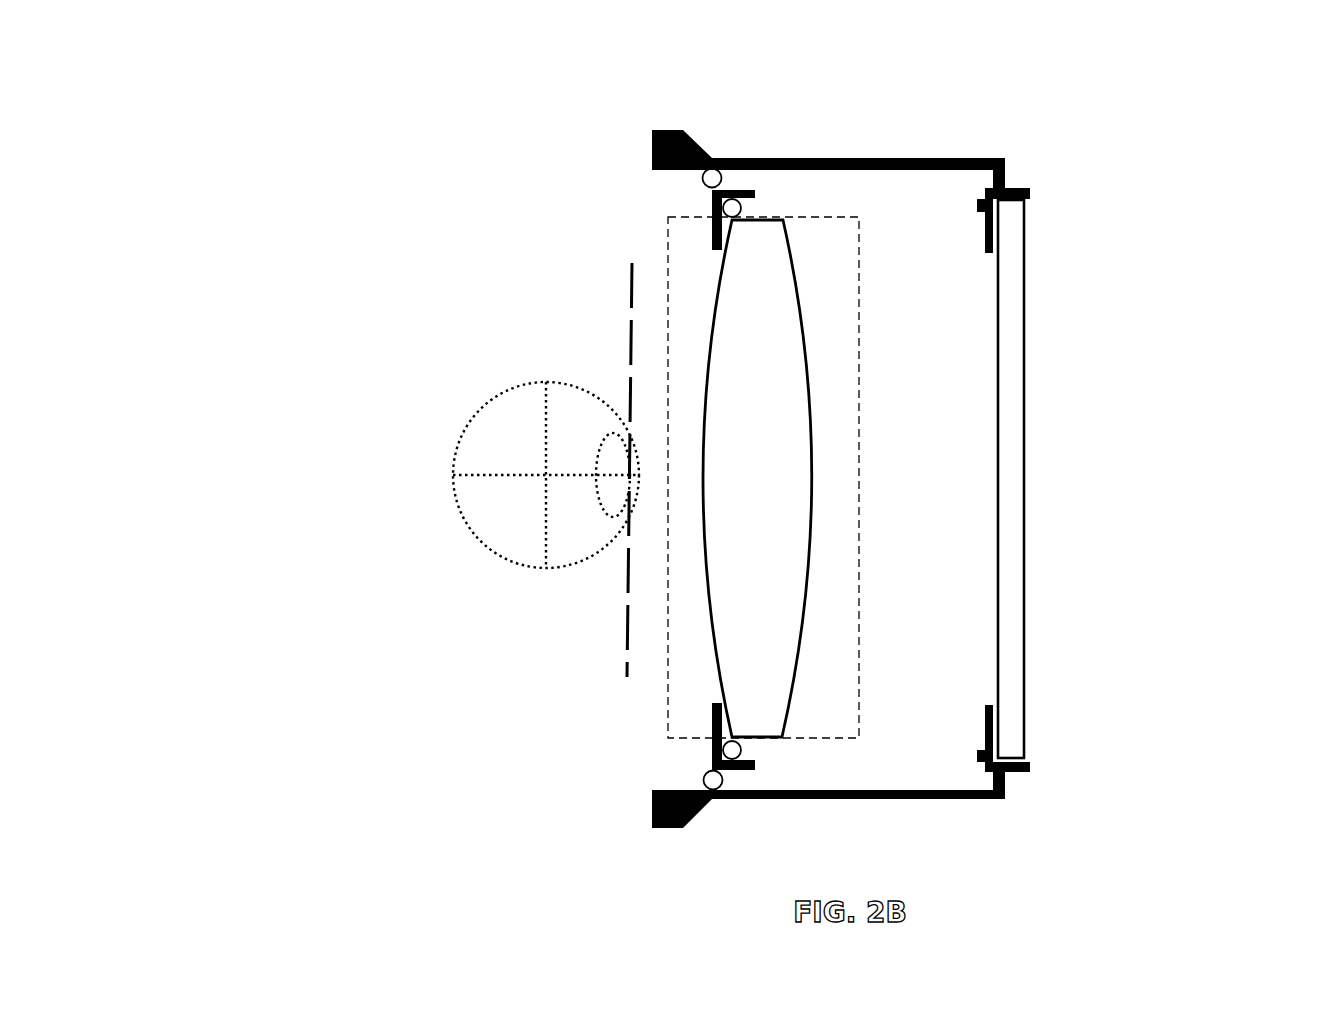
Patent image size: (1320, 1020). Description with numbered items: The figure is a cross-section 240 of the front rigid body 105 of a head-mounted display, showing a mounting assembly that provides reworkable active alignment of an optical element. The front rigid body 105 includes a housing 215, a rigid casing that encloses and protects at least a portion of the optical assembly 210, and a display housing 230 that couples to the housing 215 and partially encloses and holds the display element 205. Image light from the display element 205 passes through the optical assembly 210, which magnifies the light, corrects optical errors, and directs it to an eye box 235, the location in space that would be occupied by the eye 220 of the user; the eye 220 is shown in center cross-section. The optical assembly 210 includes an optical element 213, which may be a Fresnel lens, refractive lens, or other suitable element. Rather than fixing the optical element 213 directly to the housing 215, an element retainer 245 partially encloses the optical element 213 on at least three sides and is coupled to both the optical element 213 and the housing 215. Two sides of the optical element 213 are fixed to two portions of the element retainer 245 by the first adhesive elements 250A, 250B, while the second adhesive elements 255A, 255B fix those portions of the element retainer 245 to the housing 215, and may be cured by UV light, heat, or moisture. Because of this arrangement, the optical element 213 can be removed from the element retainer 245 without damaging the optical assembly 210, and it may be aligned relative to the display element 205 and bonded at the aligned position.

The cross-section 240 is at (196, 23).
The front rigid body 105 is at (702, 152).
The display element 205 is at (1025, 292).
The optical assembly 210 is at (857, 690).
The optical element 213 is at (813, 385).
The housing 215 is at (958, 158).
The eye 220 is at (455, 478).
The display housing 230 is at (1022, 188).
The eye box 235 is at (629, 325).
The element retainer 245 is at (712, 248).
The first adhesive element 250A is at (722, 207).
The first adhesive element 250B is at (722, 747).
The second adhesive element 255A is at (700, 181).
The second adhesive element 255B is at (718, 790).